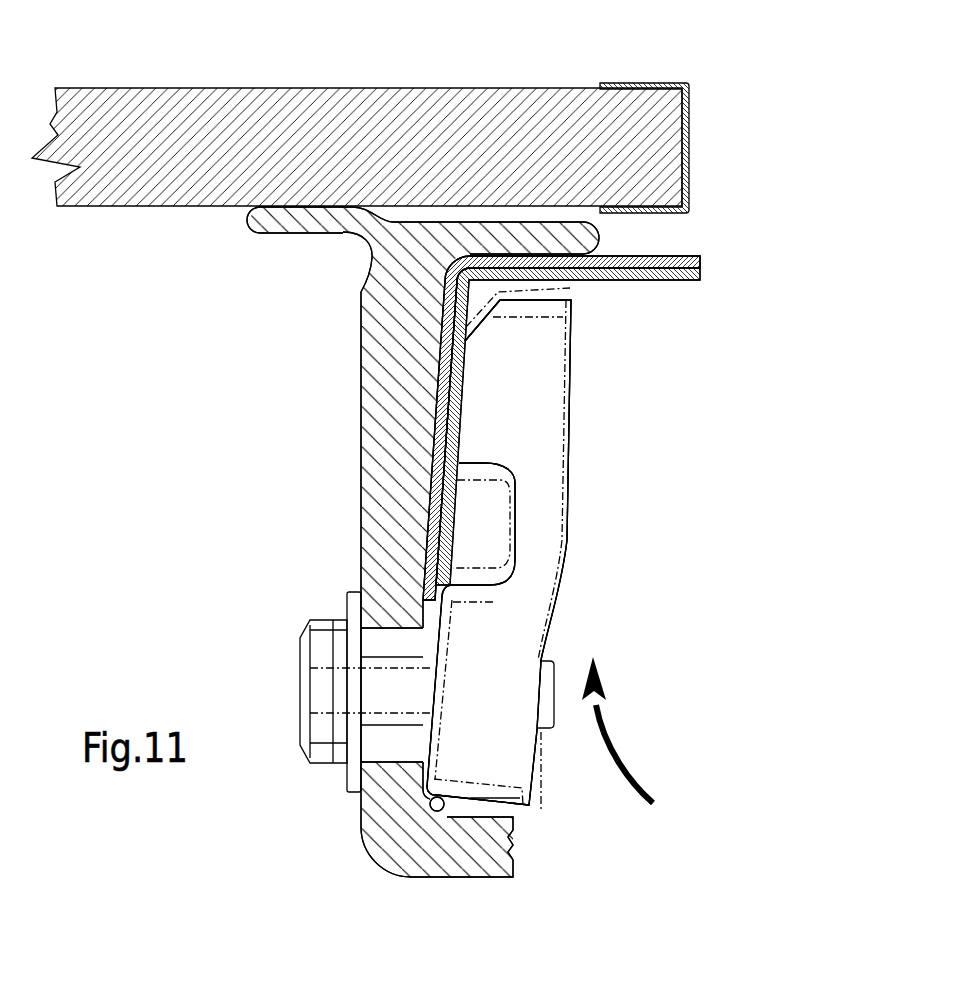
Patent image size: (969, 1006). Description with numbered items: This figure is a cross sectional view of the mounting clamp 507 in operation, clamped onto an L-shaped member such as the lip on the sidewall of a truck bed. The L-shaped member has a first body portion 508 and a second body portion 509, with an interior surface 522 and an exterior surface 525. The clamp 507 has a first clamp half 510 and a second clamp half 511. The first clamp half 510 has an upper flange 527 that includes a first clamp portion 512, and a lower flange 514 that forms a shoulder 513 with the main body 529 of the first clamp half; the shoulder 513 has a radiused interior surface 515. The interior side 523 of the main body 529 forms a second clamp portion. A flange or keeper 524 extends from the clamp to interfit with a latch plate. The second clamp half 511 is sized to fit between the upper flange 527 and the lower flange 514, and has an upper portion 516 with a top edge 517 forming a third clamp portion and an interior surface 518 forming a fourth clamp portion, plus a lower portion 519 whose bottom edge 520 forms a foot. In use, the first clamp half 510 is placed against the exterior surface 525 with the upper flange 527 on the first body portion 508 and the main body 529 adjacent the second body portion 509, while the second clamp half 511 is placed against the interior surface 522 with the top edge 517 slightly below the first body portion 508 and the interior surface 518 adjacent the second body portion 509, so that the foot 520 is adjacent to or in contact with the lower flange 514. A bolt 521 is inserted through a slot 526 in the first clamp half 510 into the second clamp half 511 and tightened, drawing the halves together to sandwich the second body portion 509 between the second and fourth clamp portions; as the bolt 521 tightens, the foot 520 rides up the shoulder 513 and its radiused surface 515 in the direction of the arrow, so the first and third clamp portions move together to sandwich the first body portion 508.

The mounting clamp 507 is at (647, 698).
The first body portion 508 is at (592, 426).
The second body portion 509 is at (408, 530).
The first clamp half 510 is at (414, 545).
The second clamp half 511 is at (555, 550).
The first clamp portion 512 is at (595, 411).
The shoulder 513 is at (383, 847).
The lower flange 514 is at (506, 876).
The radiused interior surface 515 is at (386, 865).
The upper portion 516 is at (555, 552).
The top edge 517 is at (573, 333).
The interior surface 518 is at (568, 426).
The lower portion 519 is at (537, 585).
The bottom edge 520 is at (441, 874).
The bolt 521 is at (333, 691).
The interior surface 522 is at (578, 530).
The interior side 523 is at (470, 428).
The flange or keeper 524 is at (300, 122).
The exterior surface 525 is at (616, 392).
The slot 526 is at (299, 699).
The upper flange 527 is at (547, 212).
The main body 529 is at (307, 529).